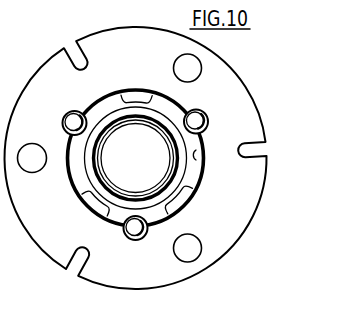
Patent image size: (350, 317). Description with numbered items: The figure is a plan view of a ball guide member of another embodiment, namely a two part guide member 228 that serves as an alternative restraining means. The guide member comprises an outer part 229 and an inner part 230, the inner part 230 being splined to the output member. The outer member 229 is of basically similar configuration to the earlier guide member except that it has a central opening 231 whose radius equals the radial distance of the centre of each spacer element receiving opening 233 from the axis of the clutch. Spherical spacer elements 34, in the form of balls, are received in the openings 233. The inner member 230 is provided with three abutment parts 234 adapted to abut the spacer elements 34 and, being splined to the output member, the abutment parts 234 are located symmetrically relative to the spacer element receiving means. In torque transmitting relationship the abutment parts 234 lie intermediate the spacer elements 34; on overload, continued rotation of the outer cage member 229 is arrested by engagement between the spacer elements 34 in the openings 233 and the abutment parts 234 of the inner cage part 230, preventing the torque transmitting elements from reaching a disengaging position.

The two part guide member 228 is at (291, 106).
The outer part 229 is at (212, 66).
The inner part 230 is at (168, 131).
The central opening 231 is at (203, 156).
The spacer element receiving opening 233 is at (196, 124).
The abutment part 234 is at (93, 186).
The spacer element 34 is at (71, 111).